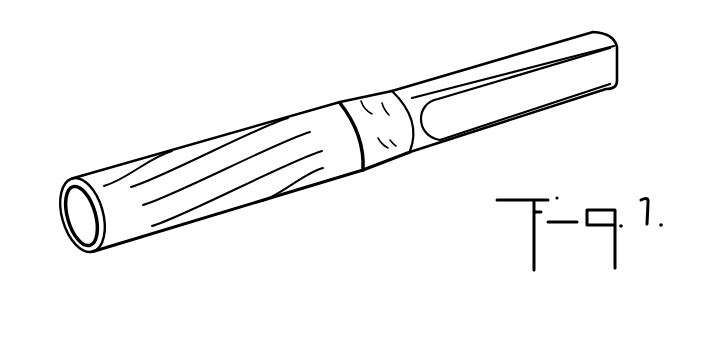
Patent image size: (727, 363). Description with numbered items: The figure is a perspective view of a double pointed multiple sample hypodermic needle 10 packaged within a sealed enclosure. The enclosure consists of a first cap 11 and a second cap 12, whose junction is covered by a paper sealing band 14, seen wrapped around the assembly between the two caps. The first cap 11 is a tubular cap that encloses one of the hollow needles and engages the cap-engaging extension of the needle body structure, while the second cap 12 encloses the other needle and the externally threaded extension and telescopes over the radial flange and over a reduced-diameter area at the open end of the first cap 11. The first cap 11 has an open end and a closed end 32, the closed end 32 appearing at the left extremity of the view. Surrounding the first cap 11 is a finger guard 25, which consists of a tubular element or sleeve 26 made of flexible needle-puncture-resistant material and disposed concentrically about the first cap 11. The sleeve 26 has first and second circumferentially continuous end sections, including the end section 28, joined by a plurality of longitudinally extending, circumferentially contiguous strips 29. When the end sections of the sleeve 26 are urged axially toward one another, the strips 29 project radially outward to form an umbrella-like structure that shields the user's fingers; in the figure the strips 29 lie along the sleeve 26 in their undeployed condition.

The double pointed multiple sample hypodermic needle 10 is at (315, 167).
The first cap 11 is at (72, 210).
The second cap 12 is at (534, 49).
The paper sealing band 14 is at (381, 92).
The finger guard 25 is at (227, 220).
The tubular element or sleeve 26 is at (88, 257).
The second end section 28 is at (103, 190).
The longitudinally extending strips 29 is at (215, 192).
The closed end 32 is at (58, 224).